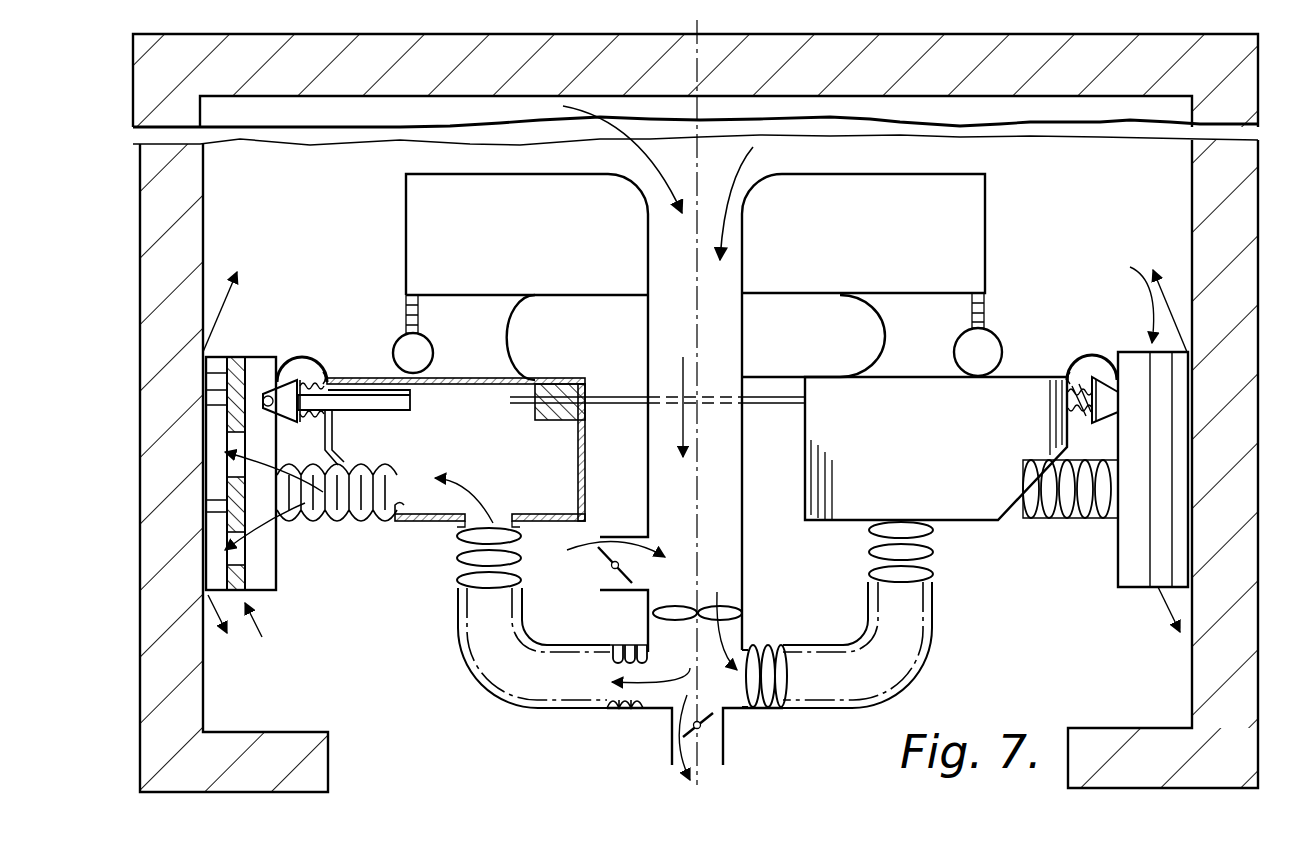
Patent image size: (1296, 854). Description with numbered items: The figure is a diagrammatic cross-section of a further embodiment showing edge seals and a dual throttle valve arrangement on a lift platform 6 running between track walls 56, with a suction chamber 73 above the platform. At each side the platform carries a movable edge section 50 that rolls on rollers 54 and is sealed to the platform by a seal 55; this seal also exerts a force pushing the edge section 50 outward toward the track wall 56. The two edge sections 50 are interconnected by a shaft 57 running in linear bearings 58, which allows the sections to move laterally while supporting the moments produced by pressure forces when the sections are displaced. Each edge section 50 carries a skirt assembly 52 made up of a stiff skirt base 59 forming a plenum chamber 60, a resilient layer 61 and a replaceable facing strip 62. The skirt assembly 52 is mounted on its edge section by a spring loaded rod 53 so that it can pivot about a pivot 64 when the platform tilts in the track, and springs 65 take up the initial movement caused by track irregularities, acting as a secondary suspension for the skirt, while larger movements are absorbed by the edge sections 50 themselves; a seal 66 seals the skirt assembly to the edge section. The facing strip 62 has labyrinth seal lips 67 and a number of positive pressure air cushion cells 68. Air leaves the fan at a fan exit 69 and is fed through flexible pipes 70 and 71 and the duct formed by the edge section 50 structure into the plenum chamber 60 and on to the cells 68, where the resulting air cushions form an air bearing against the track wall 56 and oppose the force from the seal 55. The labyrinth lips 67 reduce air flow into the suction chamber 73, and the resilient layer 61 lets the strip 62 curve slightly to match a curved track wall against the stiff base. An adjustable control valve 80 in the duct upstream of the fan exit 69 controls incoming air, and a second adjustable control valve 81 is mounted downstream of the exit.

The lift platform 6 is at (992, 222).
The edge section 50 is at (503, 376).
The skirt assembly 52 is at (250, 622).
The spring loaded rod 53 is at (399, 414).
The roller 54 is at (434, 354).
The seal 55 is at (887, 348).
The track wall 56 is at (203, 226).
The shaft 57 is at (773, 397).
The linear bearing 58 is at (548, 421).
The skirt base 59 is at (283, 362).
The plenum chamber 60 is at (262, 564).
The resilient layer 61 is at (247, 357).
The replaceable facing strip 62 is at (234, 355).
The pivot 64 is at (268, 418).
The spring 65 is at (331, 419).
The seal 66 is at (324, 368).
The labyrinth seal lips 67 is at (225, 384).
The positive pressure air cushion cells 68 is at (212, 430).
The fan exit 69 is at (606, 668).
The flexible pipe 70 is at (458, 666).
The flexible pipe 71 is at (352, 522).
The suction chamber 73 is at (345, 183).
The adjustable control valve 80 is at (612, 566).
The adjustable control valve 81 is at (713, 719).